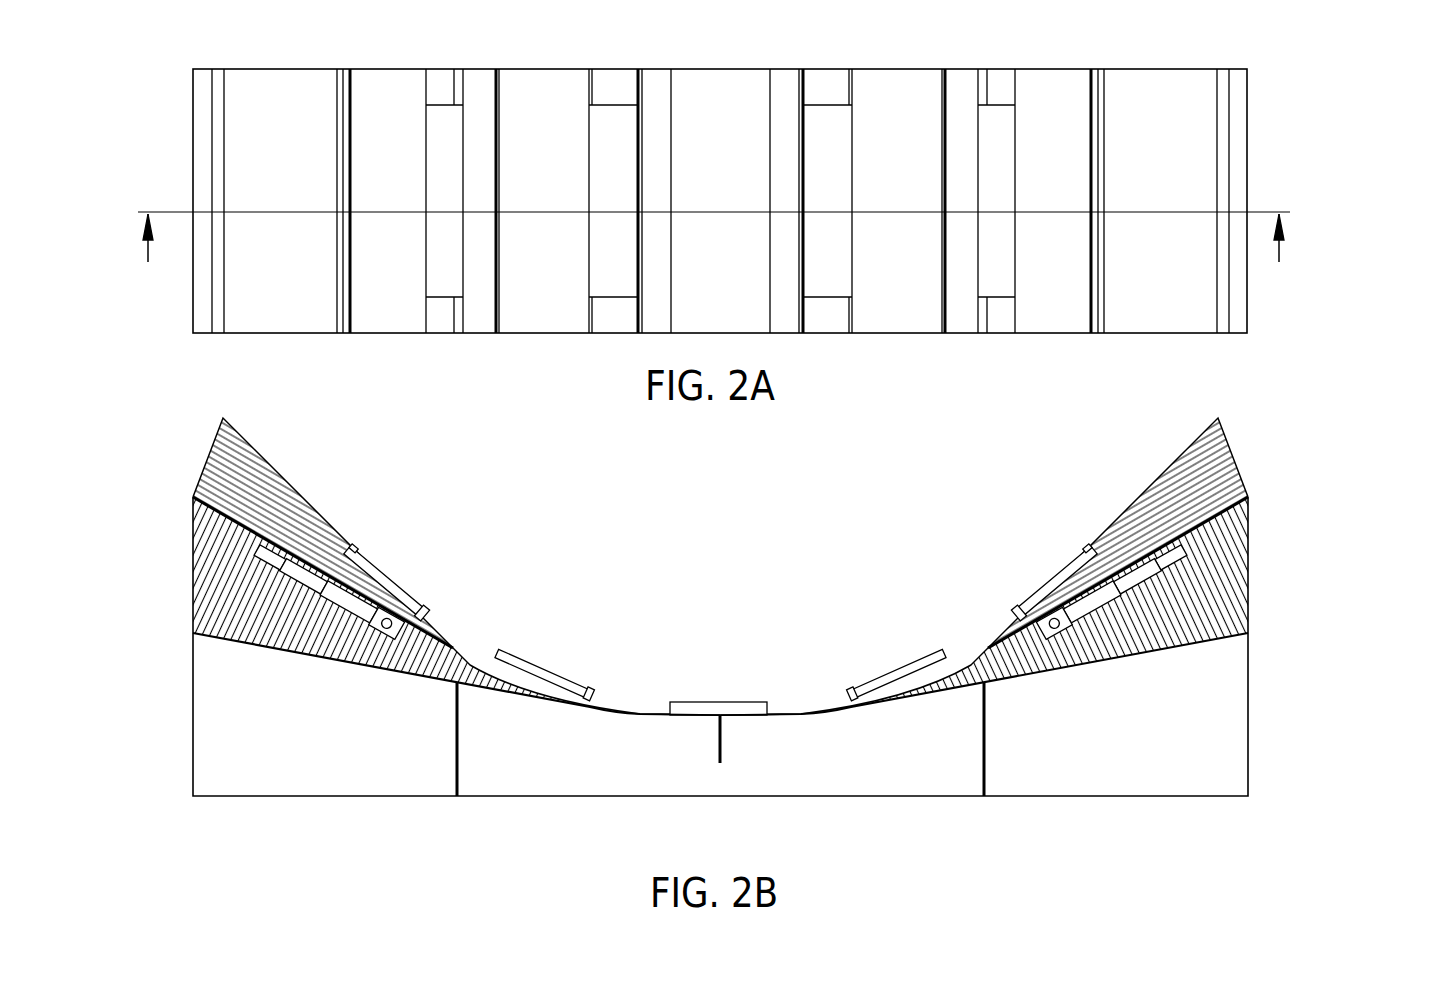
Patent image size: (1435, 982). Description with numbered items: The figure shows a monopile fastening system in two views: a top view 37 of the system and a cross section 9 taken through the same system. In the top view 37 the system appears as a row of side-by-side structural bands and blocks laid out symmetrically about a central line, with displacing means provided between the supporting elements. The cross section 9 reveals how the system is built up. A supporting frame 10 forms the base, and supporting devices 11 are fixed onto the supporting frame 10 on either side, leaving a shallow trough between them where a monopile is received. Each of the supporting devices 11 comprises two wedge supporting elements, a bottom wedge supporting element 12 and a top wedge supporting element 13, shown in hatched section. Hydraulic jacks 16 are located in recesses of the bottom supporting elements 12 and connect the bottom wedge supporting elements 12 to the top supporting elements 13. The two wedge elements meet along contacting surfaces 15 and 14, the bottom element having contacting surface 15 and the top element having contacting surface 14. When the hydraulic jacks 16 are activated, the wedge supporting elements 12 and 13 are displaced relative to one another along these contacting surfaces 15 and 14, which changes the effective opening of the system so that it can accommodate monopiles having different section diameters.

In FIG. 2A, the top view 37 is at (1286, 94).
In FIG. 2B, the cross section 9 is at (734, 610).
In FIG. 2B, the supporting frame 10 is at (380, 735).
In FIG. 2B, the supporting device 11 is at (734, 556).
In FIG. 2B, the bottom wedge supporting element 12 is at (222, 590).
In FIG. 2B, the top wedge supporting element 13 is at (227, 483).
In FIG. 2B, the contacting surface 14 is at (195, 505).
In FIG. 2B, the contacting surface 15 is at (257, 547).
In FIG. 2B, the hydraulic jack 16 is at (377, 587).